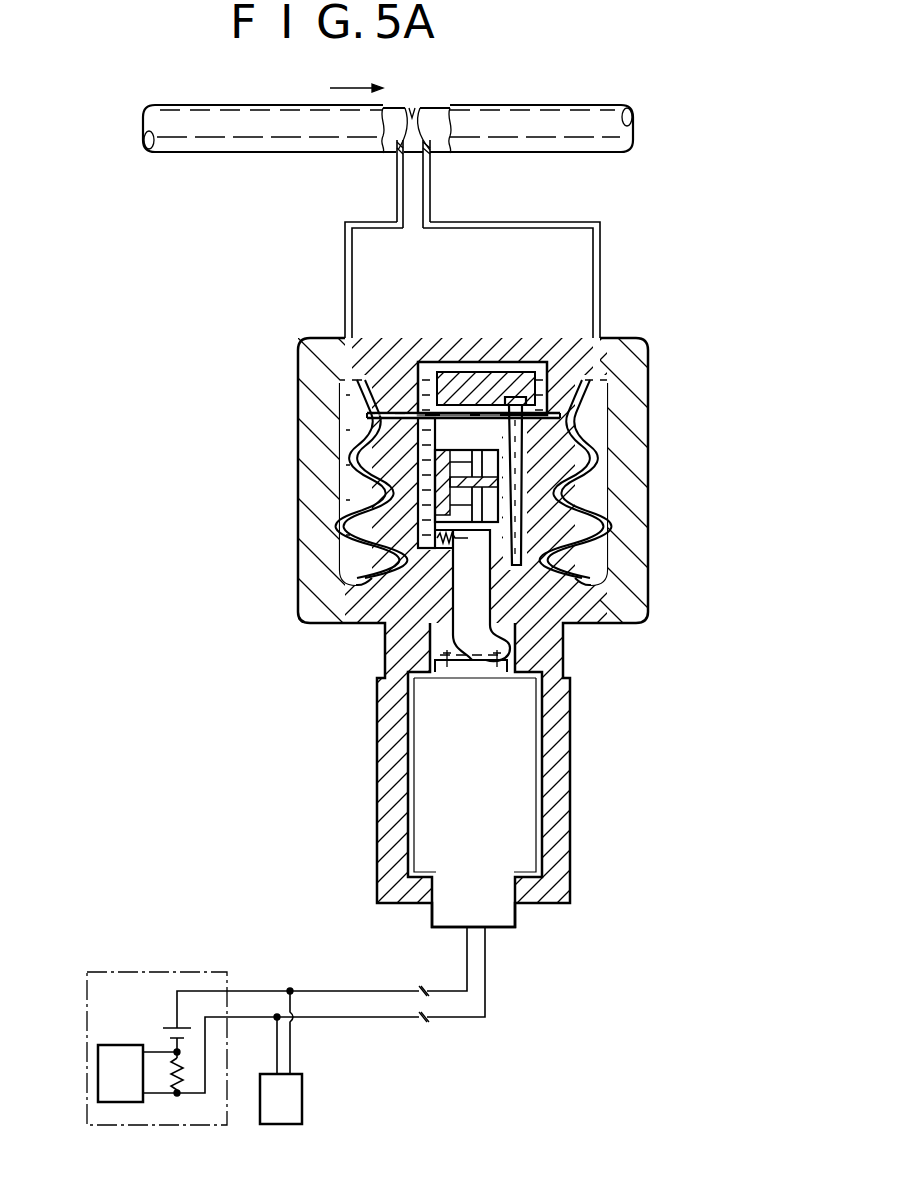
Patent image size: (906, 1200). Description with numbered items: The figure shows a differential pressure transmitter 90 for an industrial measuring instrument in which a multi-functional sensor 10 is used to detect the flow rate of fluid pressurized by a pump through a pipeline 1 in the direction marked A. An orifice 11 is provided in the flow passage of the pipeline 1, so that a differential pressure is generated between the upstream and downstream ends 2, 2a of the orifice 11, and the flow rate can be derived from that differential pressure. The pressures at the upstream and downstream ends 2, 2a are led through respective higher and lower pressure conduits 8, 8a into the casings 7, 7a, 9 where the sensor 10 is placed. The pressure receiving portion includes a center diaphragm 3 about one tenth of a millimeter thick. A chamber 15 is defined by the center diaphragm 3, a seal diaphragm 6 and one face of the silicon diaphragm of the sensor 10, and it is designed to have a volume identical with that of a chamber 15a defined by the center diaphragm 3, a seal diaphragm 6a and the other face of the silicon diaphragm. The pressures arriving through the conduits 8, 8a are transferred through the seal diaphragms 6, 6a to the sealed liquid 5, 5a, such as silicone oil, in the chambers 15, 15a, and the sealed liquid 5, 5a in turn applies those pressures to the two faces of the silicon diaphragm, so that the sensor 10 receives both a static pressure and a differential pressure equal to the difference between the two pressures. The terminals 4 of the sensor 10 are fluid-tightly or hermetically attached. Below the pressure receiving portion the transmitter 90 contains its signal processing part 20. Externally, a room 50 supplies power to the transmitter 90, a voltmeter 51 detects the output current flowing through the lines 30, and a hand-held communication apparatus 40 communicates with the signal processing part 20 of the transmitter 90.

The pipeline 1 is at (241, 110).
The orifice 11 is at (415, 103).
The upstream end 2 is at (390, 137).
The downstream end 2a is at (436, 137).
The higher pressure conduit 8 is at (345, 273).
The lower pressure conduit 8a is at (600, 273).
The casing 9 is at (375, 346).
The chamber 15 is at (393, 410).
The sealed liquid 5 is at (418, 400).
The sealed liquid 5a is at (548, 400).
The chamber 15a is at (573, 410).
The seal diaphragm 6 is at (340, 441).
The seal diaphragm 6a is at (586, 452).
The casing 7 is at (298, 498).
The casing 7a is at (648, 498).
The sensor 10 is at (372, 512).
The terminals 4 is at (418, 540).
The center diaphragm 3 is at (530, 500).
The differential pressure transmitter 90 is at (236, 706).
The signal processing part 20 is at (432, 766).
The power supply room 50 is at (148, 971).
The voltmeter 51 is at (98, 1075).
The hand-held communication apparatus 40 is at (302, 1097).
The lines 30 is at (357, 1018).